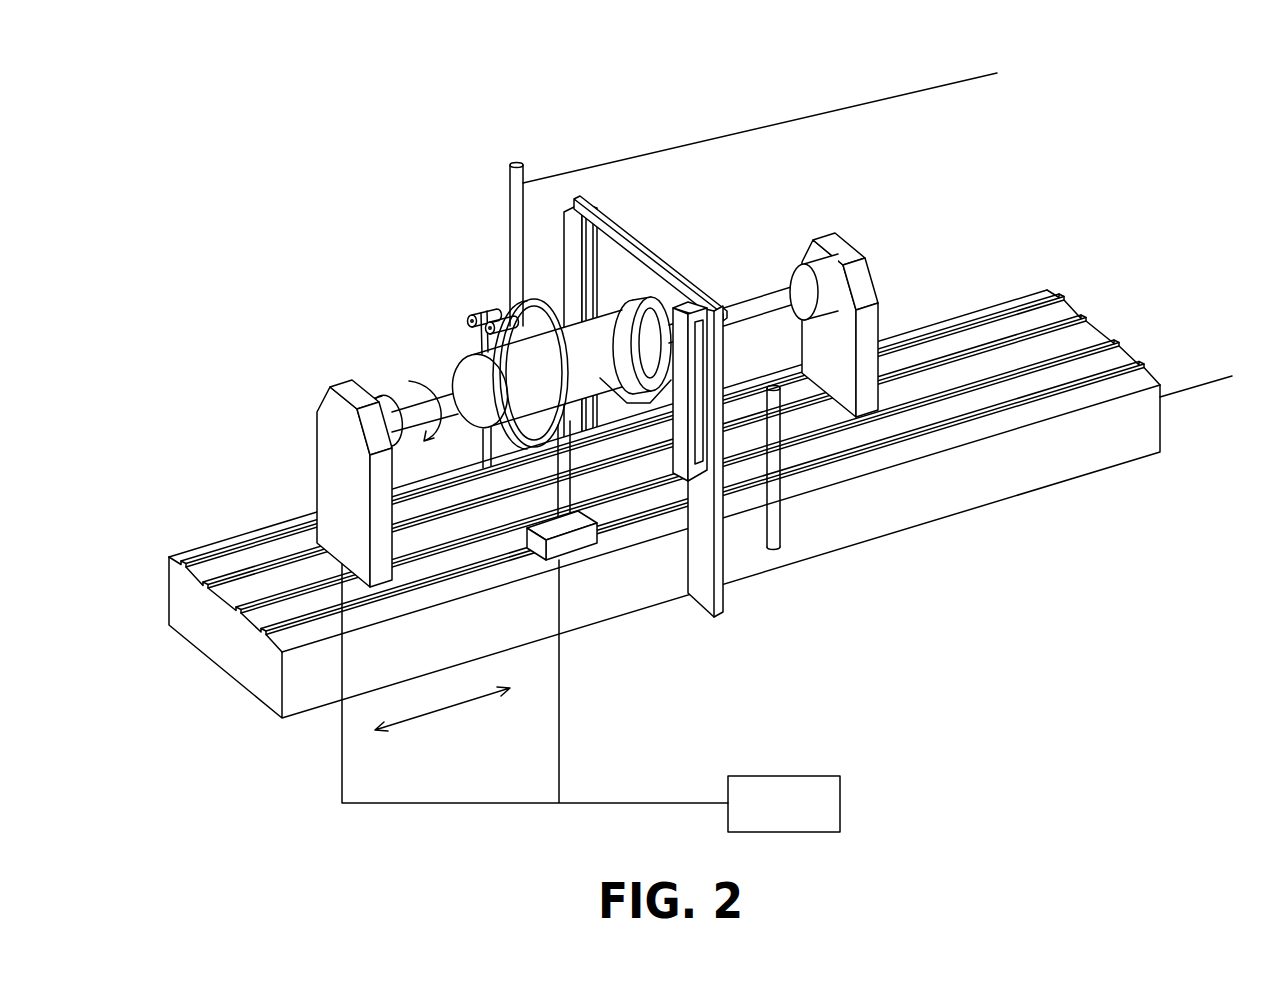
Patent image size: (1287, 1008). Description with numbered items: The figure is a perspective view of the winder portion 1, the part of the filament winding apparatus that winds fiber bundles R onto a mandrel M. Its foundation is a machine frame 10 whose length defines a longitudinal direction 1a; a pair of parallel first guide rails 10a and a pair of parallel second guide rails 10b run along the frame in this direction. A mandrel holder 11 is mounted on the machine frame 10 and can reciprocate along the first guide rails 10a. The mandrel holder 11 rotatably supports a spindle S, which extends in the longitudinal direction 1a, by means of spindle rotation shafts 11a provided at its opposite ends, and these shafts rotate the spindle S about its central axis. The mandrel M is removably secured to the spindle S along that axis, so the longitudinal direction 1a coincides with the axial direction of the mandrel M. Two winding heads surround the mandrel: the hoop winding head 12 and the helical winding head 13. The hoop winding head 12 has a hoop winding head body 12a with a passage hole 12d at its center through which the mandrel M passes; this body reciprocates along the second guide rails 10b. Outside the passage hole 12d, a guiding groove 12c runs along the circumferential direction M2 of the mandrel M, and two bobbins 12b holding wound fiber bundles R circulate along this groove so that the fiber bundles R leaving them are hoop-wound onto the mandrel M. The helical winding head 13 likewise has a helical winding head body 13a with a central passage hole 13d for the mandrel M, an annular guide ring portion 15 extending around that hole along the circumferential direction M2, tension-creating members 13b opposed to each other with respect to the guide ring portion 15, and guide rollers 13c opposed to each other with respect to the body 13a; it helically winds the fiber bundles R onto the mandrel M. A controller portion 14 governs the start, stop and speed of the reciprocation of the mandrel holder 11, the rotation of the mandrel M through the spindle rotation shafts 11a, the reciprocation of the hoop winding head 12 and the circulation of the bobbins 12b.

The winder portion 1 is at (353, 197).
The longitudinal direction 1a is at (440, 710).
The machine frame 10 is at (970, 495).
The first guide rails 10a is at (260, 607).
The second guide rails 10b is at (1067, 297).
The mandrel holder 11 is at (327, 450).
The spindle rotation shafts 11a is at (373, 392).
The hoop winding head 12 is at (506, 300).
The hoop winding head body 12a is at (567, 468).
The bobbins 12b is at (484, 320).
The guiding groove 12c is at (535, 452).
The passage hole 12d is at (478, 352).
The helical winding head 13 is at (644, 228).
The helical winding head body 13a is at (698, 585).
The tension-creating members 13b is at (590, 200).
The guide rollers 13c is at (506, 170).
The passage hole 13d is at (622, 308).
The controller portion 14 is at (840, 808).
The guide ring portion 15 is at (644, 315).
The mandrel M is at (609, 400).
The circumferential direction M2 is at (406, 373).
The spindle S is at (768, 300).
The fiber bundles R is at (798, 118).